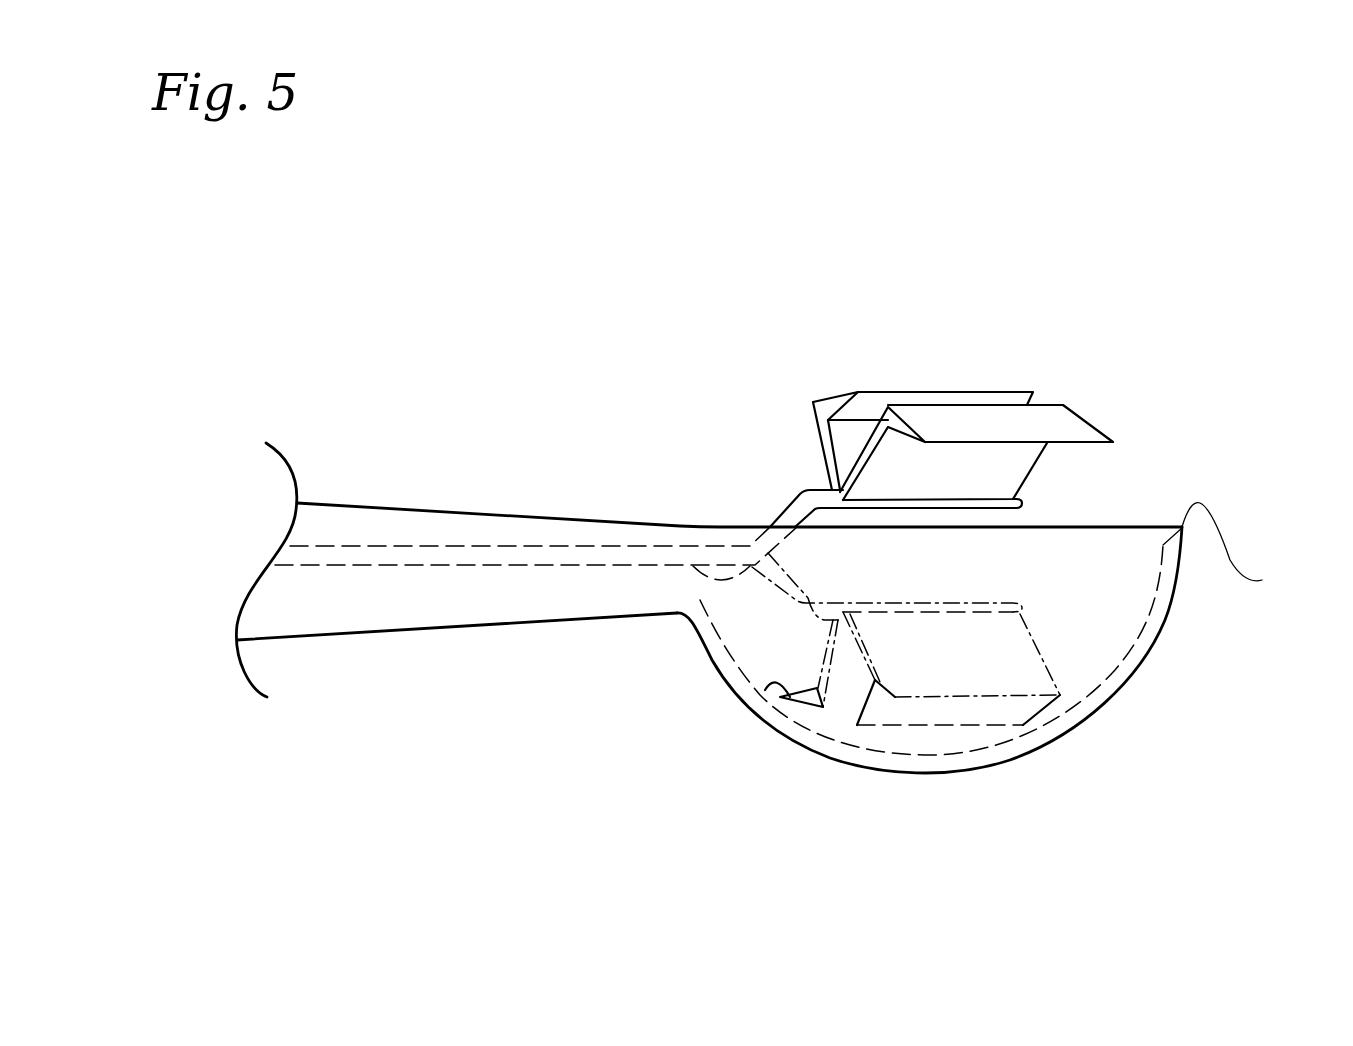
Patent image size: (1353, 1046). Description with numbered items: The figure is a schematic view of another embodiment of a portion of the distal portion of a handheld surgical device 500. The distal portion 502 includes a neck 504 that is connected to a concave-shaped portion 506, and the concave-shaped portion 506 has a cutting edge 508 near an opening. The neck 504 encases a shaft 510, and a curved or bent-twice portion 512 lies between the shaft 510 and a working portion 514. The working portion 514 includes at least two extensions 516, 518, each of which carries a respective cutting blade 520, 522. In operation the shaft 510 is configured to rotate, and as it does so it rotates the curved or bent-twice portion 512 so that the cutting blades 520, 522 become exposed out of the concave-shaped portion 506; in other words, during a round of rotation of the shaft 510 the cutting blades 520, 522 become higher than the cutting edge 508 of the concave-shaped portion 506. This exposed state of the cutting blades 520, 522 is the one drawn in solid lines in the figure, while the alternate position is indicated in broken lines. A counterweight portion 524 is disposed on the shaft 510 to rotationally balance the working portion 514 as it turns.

The handheld surgical device 500 is at (520, 280).
The distal portion 502 is at (1192, 862).
The neck 504 is at (378, 503).
The concave-shaped portion 506 is at (1000, 765).
The cutting edge 508 is at (1250, 548).
The shaft 510 is at (517, 545).
The curved or bent-twice portion 512 is at (787, 510).
The working portion 514 is at (806, 317).
The extension 516 is at (817, 437).
The extension 518 is at (1030, 477).
The cutting blade 520 is at (1008, 392).
The cutting blade 522 is at (1095, 446).
The counterweight portion 524 is at (693, 582).